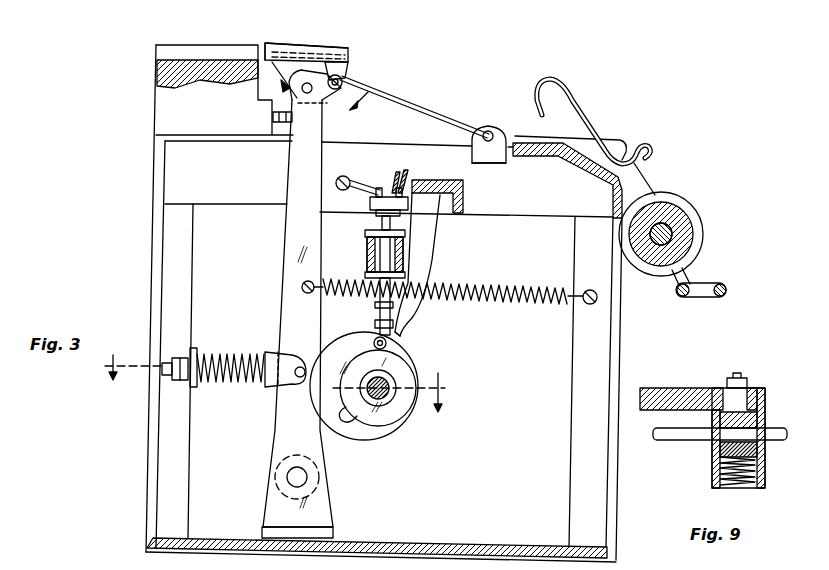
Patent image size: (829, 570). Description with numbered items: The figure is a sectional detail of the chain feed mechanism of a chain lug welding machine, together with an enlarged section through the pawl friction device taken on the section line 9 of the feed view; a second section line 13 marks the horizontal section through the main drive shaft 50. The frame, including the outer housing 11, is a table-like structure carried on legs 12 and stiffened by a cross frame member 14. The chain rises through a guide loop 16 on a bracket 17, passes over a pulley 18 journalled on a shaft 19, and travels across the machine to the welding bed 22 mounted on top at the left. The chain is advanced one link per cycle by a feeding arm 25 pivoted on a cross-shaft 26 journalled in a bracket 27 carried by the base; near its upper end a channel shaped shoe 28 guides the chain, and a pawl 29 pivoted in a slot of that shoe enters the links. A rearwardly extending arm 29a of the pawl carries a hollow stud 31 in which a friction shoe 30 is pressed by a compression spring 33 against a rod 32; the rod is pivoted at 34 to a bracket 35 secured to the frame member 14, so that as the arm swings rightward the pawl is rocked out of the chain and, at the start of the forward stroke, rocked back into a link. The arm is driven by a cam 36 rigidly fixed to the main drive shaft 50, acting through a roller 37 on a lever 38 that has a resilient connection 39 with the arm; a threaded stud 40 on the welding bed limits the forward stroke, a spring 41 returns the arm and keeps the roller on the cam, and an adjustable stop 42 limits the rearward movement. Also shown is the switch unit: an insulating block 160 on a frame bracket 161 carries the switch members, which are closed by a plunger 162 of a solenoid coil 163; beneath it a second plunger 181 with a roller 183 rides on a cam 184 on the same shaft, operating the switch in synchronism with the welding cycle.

In FIG. 3, the section line 9— 9 is at (320, 98).
In FIG. 3, the housing frame 11 is at (397, 307).
In FIG. 3, the legs 12 is at (189, 487).
In FIG. 3, the section line 13— 13 is at (279, 392).
In FIG. 3, the cross frame member 14 is at (569, 177).
In FIG. 3, the guide loop 16 is at (728, 290).
In FIG. 3, the bracket 17 is at (640, 178).
In FIG. 3, the pulley 18 is at (683, 242).
In FIG. 3, the shaft 19 is at (667, 244).
In FIG. 3, the welding bed 22 is at (224, 90).
In FIG. 3, the feeding arm 25 is at (290, 233).
In FIG. 3, the cross-shaft 26 is at (307, 477).
In FIG. 3, the bracket 27 is at (310, 508).
In FIG. 3, the shoe 28 is at (400, 545).
In FIG. 3, the pawl 29 is at (285, 45).
In FIG. 3, the rearwardly extending arm 29a is at (358, 70).
In FIG. 9, the rearwardly extending arm 29a is at (690, 388).
In FIG. 3, the shoe 30 is at (346, 84).
In FIG. 9, the shoe 30 is at (756, 452).
In FIG. 9, the hollow stud 31 is at (720, 428).
In FIG. 3, the rod 32 is at (437, 114).
In FIG. 9, the rod 32 is at (657, 440).
In FIG. 9, the compression spring 33 is at (718, 470).
In FIG. 3, the pivot 34 is at (487, 132).
In FIG. 3, the bracket 35 is at (492, 160).
In FIG. 3, the cam 36 is at (357, 438).
In FIG. 3, the roller 37 is at (301, 362).
In FIG. 3, the lever 38 is at (286, 378).
In FIG. 3, the resilient connection 39 is at (236, 382).
In FIG. 3, the threaded stud 40 is at (283, 120).
In FIG. 3, the spring 41 is at (535, 287).
In FIG. 3, the adjustable stop 42 is at (347, 178).
In FIG. 3, the main drive shaft 50 is at (388, 396).
In FIG. 3, the insulating block 160 is at (370, 203).
In FIG. 3, the frame bracket 161 is at (431, 247).
In FIG. 3, the plunger 162 is at (381, 222).
In FIG. 3, the solenoid coil 163 is at (376, 259).
In FIG. 3, the second plunger 181 is at (394, 338).
In FIG. 3, the roller 183 is at (403, 350).
In FIG. 3, the cam 184 is at (405, 376).